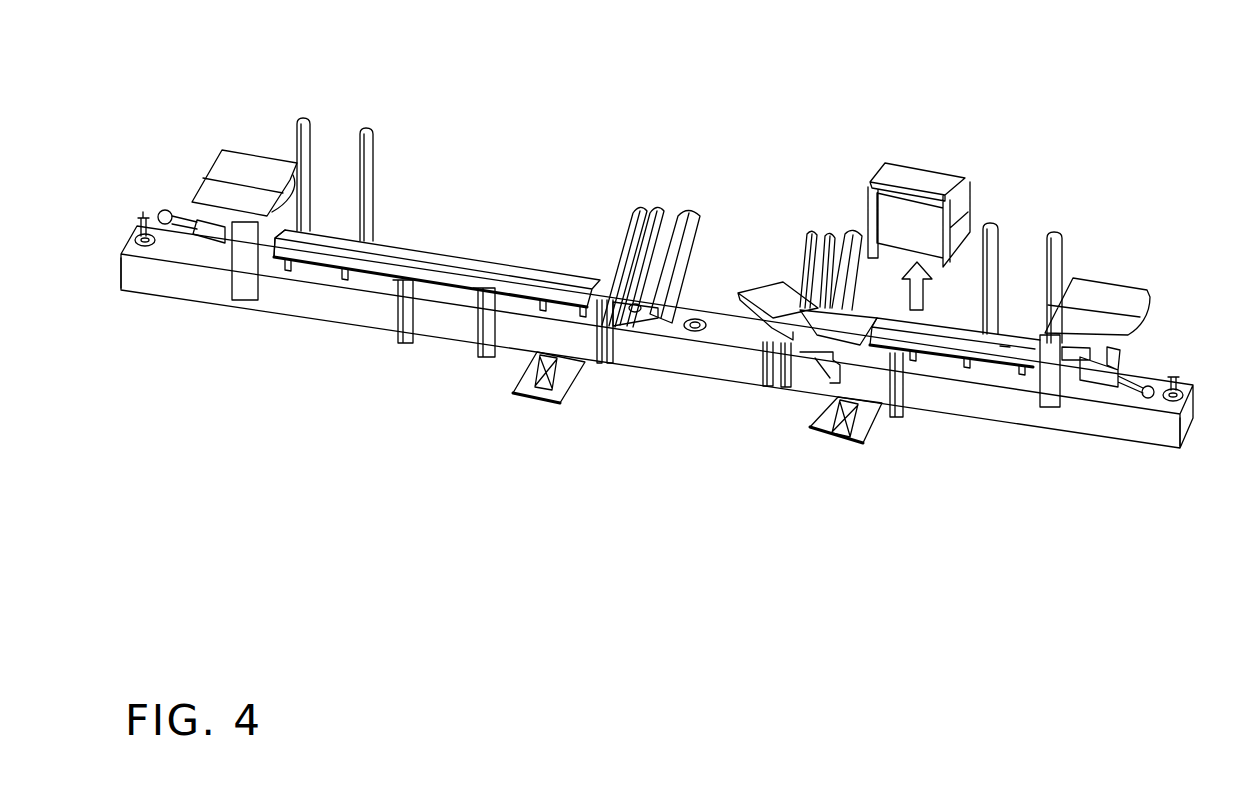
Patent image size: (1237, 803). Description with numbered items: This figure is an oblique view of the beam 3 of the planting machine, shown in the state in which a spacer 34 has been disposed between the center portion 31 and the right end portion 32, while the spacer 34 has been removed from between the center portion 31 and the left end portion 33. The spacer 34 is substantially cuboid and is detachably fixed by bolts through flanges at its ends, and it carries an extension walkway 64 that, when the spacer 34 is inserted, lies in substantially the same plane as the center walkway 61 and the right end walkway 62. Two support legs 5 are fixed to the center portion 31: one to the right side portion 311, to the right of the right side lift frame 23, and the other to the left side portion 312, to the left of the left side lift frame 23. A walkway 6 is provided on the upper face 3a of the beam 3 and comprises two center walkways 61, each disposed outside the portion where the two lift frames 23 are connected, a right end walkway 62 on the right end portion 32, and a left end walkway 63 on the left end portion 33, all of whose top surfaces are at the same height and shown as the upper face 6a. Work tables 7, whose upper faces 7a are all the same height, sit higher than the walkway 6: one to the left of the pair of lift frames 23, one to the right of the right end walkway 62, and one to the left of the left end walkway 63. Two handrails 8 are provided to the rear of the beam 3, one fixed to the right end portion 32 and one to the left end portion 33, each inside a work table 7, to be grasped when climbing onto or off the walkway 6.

The beam 3 is at (474, 378).
The upper face 3a is at (750, 343).
The support leg 5 is at (532, 403).
The walkway 6 is at (584, 258).
The upper face 6a is at (387, 253).
The work table 7 is at (238, 147).
The upper face 7a is at (221, 193).
The handrail 8 is at (360, 130).
The lift frame 23 is at (630, 253).
The center portion 31 is at (664, 387).
The right end portion 32 is at (292, 300).
The left end portion 33 is at (1068, 418).
The spacer 34 is at (442, 323).
The center walkway 61 is at (527, 280).
The right end walkway 62 is at (367, 257).
The left end walkway 63 is at (967, 350).
The extension walkway 64 is at (457, 273).
The right side portion 311 is at (577, 342).
The left side portion 312 is at (816, 390).